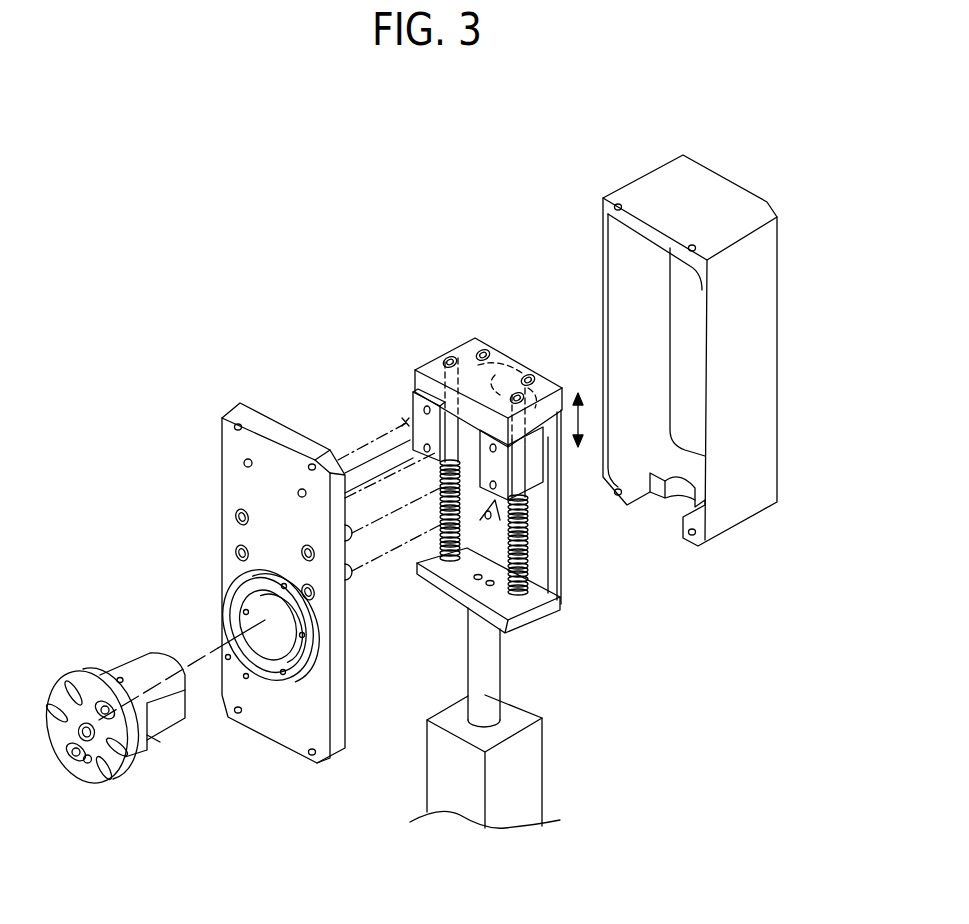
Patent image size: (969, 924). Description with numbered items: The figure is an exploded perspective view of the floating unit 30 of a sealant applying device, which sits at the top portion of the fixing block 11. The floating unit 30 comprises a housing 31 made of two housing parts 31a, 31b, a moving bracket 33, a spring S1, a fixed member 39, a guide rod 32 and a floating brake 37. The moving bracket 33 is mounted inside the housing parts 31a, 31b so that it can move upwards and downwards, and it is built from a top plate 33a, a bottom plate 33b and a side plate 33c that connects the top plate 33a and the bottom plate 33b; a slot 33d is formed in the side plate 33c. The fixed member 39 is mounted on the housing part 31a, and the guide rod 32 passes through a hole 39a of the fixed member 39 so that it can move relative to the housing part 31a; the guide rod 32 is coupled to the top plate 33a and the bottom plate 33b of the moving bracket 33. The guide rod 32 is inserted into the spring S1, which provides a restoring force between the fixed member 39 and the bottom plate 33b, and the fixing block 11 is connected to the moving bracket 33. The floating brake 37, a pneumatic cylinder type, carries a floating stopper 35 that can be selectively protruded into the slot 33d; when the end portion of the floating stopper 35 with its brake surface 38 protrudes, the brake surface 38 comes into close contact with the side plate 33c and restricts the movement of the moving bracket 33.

The floating unit 30 is at (219, 191).
The housing 31 is at (180, 324).
The housing 31a is at (238, 402).
The housing 31b is at (640, 185).
The guide rod 32 is at (500, 392).
The moving bracket 33 is at (470, 355).
The top plate 33a is at (425, 375).
The bottom plate 33b is at (520, 630).
The side plate 33c is at (540, 570).
The slot 33d is at (498, 523).
The floating stopper 35 is at (127, 667).
The floating brake 37 is at (75, 652).
The brake surface 38 is at (157, 735).
The fixed member 39 is at (418, 400).
The hole 39a is at (402, 422).
The spring S1 is at (545, 600).
The fixing block 11 is at (528, 758).